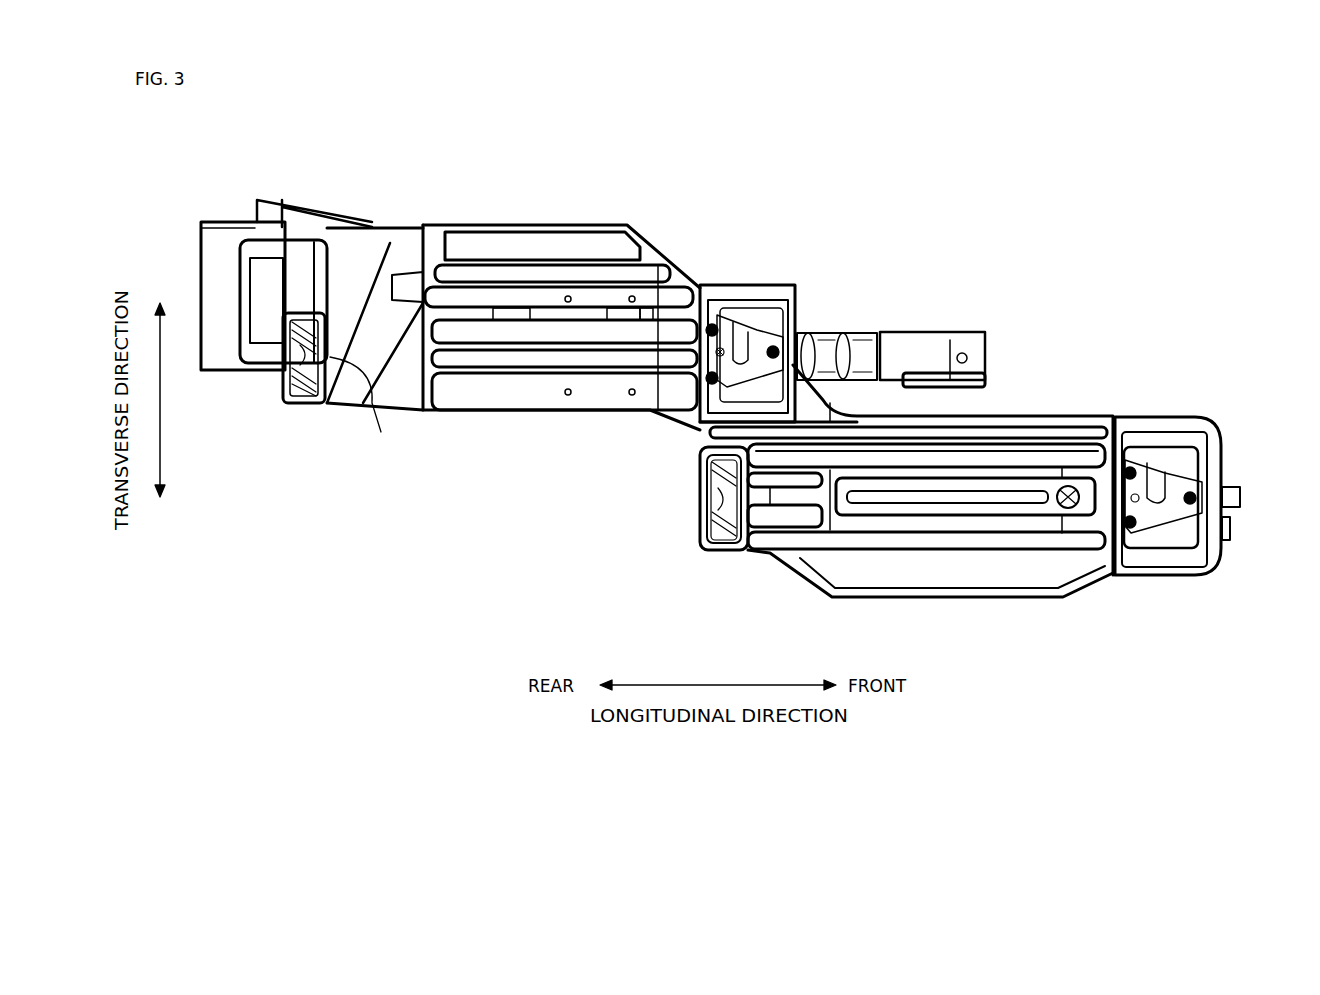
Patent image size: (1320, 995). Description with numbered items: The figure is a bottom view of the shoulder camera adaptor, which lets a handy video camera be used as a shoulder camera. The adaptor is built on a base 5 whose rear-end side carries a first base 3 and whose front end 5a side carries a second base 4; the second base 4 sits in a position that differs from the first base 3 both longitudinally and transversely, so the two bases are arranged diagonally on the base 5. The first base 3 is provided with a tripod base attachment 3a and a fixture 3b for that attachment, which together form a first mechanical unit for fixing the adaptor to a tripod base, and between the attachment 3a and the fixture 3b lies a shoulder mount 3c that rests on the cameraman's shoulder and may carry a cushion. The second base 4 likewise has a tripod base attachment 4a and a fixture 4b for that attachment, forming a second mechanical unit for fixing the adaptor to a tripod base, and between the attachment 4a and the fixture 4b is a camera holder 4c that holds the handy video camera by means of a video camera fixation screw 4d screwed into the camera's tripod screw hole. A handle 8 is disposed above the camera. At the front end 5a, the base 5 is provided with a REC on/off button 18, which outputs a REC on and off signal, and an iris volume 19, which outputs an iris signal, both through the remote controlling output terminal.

The first base 3 is at (650, 208).
The tripod base attachment 3a is at (758, 287).
The fixture for the tripod base attachment 3b is at (306, 364).
The shoulder mount 3c is at (545, 333).
The second base 4 is at (1032, 392).
The tripod base attachment 4a is at (1157, 517).
The fixture for the tripod base attachment 4b is at (712, 507).
The camera holder 4c is at (958, 507).
The video camera fixation screw 4d is at (1083, 513).
The base 5 is at (625, 443).
The front end 5a is at (1222, 470).
The handle 8 is at (835, 333).
The REC on/off button 18 is at (1231, 533).
The iris volume 19 is at (1241, 491).